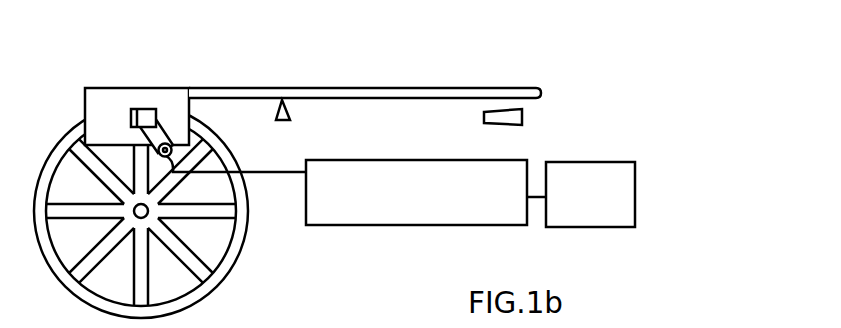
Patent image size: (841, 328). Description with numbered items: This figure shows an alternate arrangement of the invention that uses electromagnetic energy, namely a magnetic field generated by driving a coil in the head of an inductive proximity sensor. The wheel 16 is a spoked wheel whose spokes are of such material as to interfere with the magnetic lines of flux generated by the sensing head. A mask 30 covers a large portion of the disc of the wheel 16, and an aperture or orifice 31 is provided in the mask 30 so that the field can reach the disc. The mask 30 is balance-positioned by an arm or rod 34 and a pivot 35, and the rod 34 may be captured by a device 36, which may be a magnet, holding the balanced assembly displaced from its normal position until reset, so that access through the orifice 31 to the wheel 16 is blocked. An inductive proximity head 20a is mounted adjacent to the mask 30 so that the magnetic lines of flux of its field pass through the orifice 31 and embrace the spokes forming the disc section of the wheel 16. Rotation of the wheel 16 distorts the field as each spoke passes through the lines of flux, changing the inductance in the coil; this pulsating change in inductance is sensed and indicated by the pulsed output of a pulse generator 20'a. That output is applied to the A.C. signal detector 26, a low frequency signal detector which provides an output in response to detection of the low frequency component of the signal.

The wheel 16 is at (215, 295).
The mask 30 is at (98, 110).
The aperture or orifice 31 is at (150, 108).
The arm or rod 34 is at (362, 87).
The pivot 35 is at (291, 110).
The device 36 is at (522, 117).
The inductive proximity head 20a is at (168, 137).
The pulse generator 20'a is at (416, 175).
The A.C. signal detector 26 is at (635, 213).